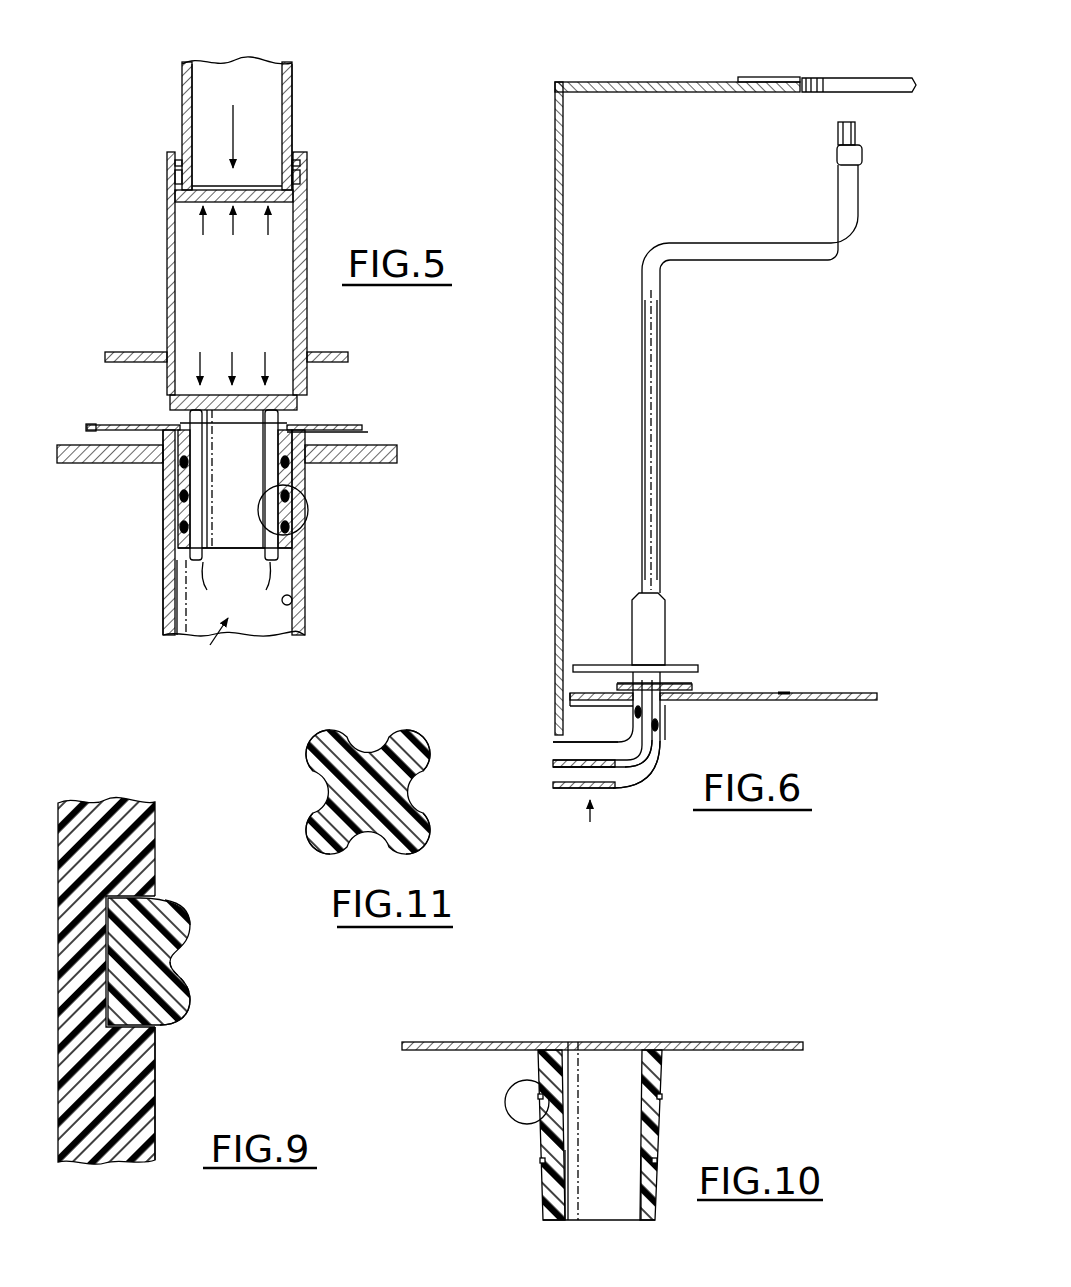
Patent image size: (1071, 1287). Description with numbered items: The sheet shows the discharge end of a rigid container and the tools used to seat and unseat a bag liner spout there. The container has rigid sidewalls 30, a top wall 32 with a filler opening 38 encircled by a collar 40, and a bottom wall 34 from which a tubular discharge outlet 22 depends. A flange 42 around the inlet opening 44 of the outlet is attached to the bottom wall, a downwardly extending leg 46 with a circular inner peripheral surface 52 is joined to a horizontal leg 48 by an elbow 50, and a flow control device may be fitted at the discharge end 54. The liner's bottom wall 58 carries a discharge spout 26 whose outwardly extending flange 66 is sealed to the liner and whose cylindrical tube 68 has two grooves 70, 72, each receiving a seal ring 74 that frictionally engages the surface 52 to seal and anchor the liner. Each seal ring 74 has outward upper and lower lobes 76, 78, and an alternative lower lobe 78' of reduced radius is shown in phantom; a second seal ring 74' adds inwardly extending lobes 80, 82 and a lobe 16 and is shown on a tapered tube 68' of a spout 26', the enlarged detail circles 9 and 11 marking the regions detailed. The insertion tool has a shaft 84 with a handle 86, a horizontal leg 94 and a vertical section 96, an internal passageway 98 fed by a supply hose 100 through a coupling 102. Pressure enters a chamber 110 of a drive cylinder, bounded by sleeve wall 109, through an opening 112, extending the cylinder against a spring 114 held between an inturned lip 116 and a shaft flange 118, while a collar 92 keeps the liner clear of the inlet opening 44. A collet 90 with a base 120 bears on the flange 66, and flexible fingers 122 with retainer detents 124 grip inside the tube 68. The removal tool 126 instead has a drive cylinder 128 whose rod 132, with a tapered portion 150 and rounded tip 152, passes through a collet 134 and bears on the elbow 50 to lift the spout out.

In FIG. 5, the detail circle for FIG. 9 is at (307, 516).
In FIG. 10, the detail circle for FIG. 11 is at (507, 1111).
In FIG. 11, the lobe 16 is at (423, 745).
In FIG. 5, the tubular discharge outlet 22 is at (208, 644).
In FIG. 6, the tubular discharge outlet 22 is at (601, 820).
In FIG. 5, the discharge spout 26 is at (221, 522).
In FIG. 6, the discharge spout 26 is at (617, 710).
In FIG. 9, the discharge spout 26 is at (196, 1093).
In FIG. 10, the spout 26' is at (709, 1131).
In FIG. 6, the sidewalls 30 is at (555, 343).
In FIG. 6, the top wall 32 is at (647, 93).
In FIG. 5, the bottom wall 34 is at (398, 462).
In FIG. 6, the bottom wall 34 is at (847, 694).
In FIG. 6, the filler opening 38 is at (833, 80).
In FIG. 6, the collar 40 is at (755, 78).
In FIG. 5, the flange 42 is at (366, 432).
In FIG. 6, the flange 42 is at (623, 683).
In FIG. 5, the inlet opening 44 is at (178, 424).
In FIG. 5, the downwardly extending leg 46 is at (166, 602).
In FIG. 6, the horizontal leg 48 is at (580, 789).
In FIG. 6, the elbow 50 is at (650, 772).
In FIG. 5, the inner peripheral surface 52 is at (303, 600).
In FIG. 6, the inner peripheral surface 52 is at (667, 753).
In FIG. 6, the discharge end 54 is at (563, 774).
In FIG. 5, the bottom wall 58 is at (90, 430).
In FIG. 6, the bottom wall 58 is at (784, 694).
In FIG. 5, the flange 66 is at (340, 426).
In FIG. 6, the flange 66 is at (683, 685).
In FIG. 10, the flange 66 is at (763, 1040).
In FIG. 5, the tube 68 is at (188, 489).
In FIG. 6, the tube 68 is at (682, 658).
In FIG. 9, the tube 68 is at (107, 963).
In FIG. 10, the tube 68' is at (636, 1135).
In FIG. 9, the groove 70 is at (147, 903).
In FIG. 10, the groove 70 is at (577, 1090).
In FIG. 10, the groove 72 is at (570, 1163).
In FIG. 5, the seal ring 74 is at (227, 510).
In FIG. 9, the seal ring 74 is at (173, 961).
In FIG. 11, the seal ring 74' is at (368, 767).
In FIG. 10, the seal ring 74' is at (594, 1122).
In FIG. 9, the upper lobe 76 is at (184, 910).
In FIG. 9, the lower lobe 78 is at (202, 1009).
In FIG. 11, the lower lobe 78 is at (437, 822).
In FIG. 9, the lower lobe of reduced radius 78' is at (223, 978).
In FIG. 11, the radially inwardly extending lobe 80 is at (312, 743).
In FIG. 11, the radially inwardly extending lobe 82 is at (309, 833).
In FIG. 5, the shaft 84 is at (180, 85).
In FIG. 6, the shaft 84 is at (678, 410).
In FIG. 6, the handle 86 is at (838, 193).
In FIG. 5, the collet 90 is at (152, 408).
In FIG. 5, the collar 92 is at (125, 350).
In FIG. 6, the collar 92 is at (592, 665).
In FIG. 6, the horizontal leg 94 is at (748, 243).
In FIG. 5, the vertical section 96 is at (293, 73).
In FIG. 6, the vertical section 96 is at (662, 327).
In FIG. 5, the internal passageway 98 is at (200, 75).
In FIG. 6, the internal passageway 98 is at (658, 480).
In FIG. 6, the supply hose 100 is at (840, 128).
In FIG. 6, the coupling 102 is at (838, 154).
In FIG. 5, the sleeve 109 is at (167, 243).
In FIG. 5, the chamber 110 is at (188, 258).
In FIG. 5, the opening 112 is at (242, 190).
In FIG. 5, the spring 114 is at (300, 177).
In FIG. 5, the inturned lip 116 is at (295, 153).
In FIG. 5, the flange 118 is at (175, 194).
In FIG. 5, the base 120 is at (300, 407).
In FIG. 5, the flexible fingers 122 is at (205, 458).
In FIG. 5, the retainer detent 124 is at (266, 588).
In FIG. 6, the tool 126 is at (812, 520).
In FIG. 6, the drive cylinder 128 is at (677, 608).
In FIG. 6, the rod 132 is at (660, 735).
In FIG. 6, the collet 134 is at (667, 717).
In FIG. 6, the tapered portion 150 is at (615, 740).
In FIG. 6, the rounded tip 152 is at (637, 790).